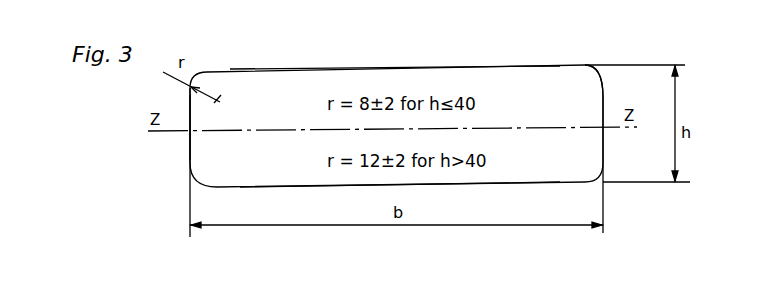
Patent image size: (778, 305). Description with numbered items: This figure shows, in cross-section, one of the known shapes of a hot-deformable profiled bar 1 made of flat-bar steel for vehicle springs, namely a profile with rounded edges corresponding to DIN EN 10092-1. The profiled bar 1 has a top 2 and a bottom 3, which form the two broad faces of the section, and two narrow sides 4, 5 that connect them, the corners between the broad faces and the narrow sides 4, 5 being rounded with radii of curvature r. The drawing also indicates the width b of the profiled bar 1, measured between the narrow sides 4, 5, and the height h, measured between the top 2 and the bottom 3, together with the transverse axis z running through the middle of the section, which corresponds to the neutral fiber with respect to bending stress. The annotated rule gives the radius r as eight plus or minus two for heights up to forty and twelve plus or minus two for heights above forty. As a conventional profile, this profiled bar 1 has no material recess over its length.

The profiled bar 1 is at (525, 208).
The top 2 is at (568, 65).
The bottom 3 is at (478, 183).
The narrow side 4 is at (603, 100).
The narrow side 5 is at (192, 150).